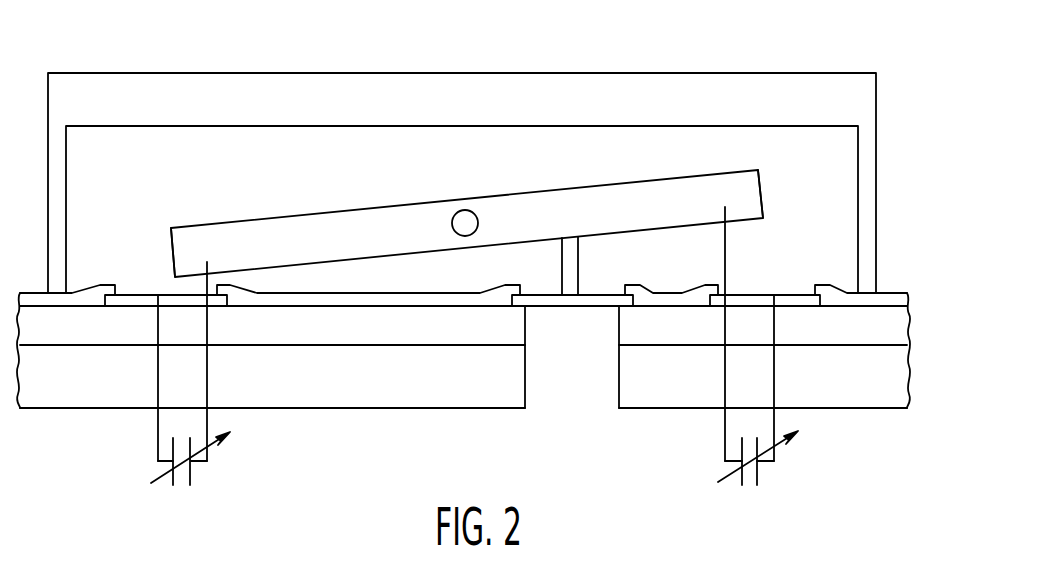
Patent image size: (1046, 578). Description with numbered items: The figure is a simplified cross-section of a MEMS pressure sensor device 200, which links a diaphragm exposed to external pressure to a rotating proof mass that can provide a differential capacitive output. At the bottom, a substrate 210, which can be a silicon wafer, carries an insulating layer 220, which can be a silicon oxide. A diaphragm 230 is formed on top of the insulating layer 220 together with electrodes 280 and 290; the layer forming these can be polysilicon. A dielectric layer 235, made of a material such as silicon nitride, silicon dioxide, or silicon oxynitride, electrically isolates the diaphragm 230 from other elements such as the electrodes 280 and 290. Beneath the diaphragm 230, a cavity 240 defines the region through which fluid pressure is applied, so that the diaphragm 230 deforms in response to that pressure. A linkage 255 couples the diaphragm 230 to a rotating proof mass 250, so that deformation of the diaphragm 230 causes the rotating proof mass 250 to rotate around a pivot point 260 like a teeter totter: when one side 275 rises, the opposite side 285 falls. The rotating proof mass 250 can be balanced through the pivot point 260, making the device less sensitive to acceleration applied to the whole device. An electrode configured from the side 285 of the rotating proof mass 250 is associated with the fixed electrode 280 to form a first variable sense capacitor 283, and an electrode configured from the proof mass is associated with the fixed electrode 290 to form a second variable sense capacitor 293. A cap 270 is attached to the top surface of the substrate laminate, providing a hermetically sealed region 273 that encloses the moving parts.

The MEMS pressure sensor device 200 is at (148, 25).
The substrate 210 is at (389, 391).
The insulating layer 220 is at (431, 336).
The diaphragm 230 is at (603, 297).
The dielectric layer 235 is at (893, 295).
The cavity 240 is at (560, 367).
The rotating proof mass 250 is at (649, 220).
The linkage 255 is at (562, 267).
The pivot point 260 is at (472, 211).
The cap 270 is at (775, 80).
The hermetically sealed region 273 is at (334, 176).
The side of rotating proof mass 275 is at (187, 238).
The electrode 280 is at (128, 297).
The first variable sense capacitor 283 is at (200, 477).
The side of rotating proof mass 285 is at (755, 197).
The electrode 290 is at (792, 297).
The second variable sense capacitor 293 is at (767, 477).